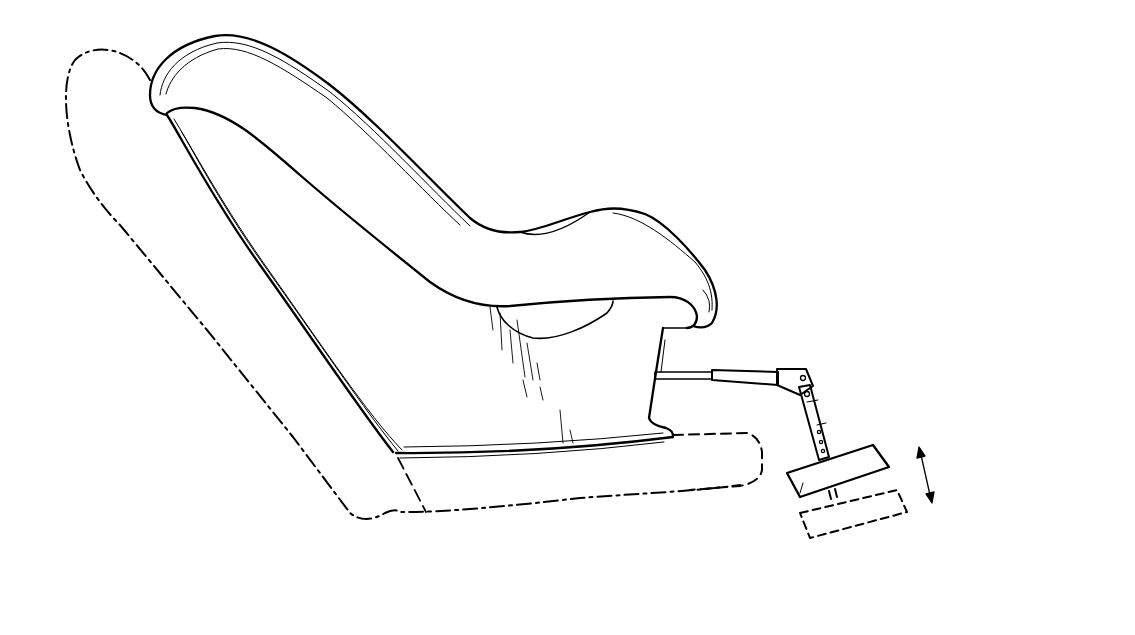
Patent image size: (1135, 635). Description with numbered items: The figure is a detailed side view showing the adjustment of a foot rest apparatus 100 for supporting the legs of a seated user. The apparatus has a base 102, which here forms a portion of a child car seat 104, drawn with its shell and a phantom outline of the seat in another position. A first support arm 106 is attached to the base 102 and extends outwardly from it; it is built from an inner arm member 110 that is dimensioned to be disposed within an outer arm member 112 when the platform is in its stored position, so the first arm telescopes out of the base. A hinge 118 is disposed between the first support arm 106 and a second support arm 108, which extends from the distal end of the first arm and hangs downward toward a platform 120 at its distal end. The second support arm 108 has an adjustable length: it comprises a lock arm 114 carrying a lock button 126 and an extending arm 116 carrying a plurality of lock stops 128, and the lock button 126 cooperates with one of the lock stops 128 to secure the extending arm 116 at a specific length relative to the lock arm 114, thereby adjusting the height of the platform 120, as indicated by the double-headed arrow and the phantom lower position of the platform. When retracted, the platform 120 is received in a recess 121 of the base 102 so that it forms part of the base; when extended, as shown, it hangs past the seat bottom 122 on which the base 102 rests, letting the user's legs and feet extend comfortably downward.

The foot rest apparatus 100 is at (686, 72).
The base 102 is at (380, 363).
The child car seat 104 is at (370, 147).
The first support arms 106 is at (723, 372).
The second support arms 108 is at (802, 412).
The inner arm member 110 is at (665, 372).
The outer arm member 112 is at (767, 368).
The lock arm 114 is at (822, 417).
The extending arm 116 is at (823, 440).
The hinge 118 is at (804, 376).
The platform 120 is at (830, 523).
The recess 121 is at (677, 405).
The seat bottom 122 is at (536, 490).
The lock button 126 is at (810, 395).
The lock stops 128 is at (825, 443).